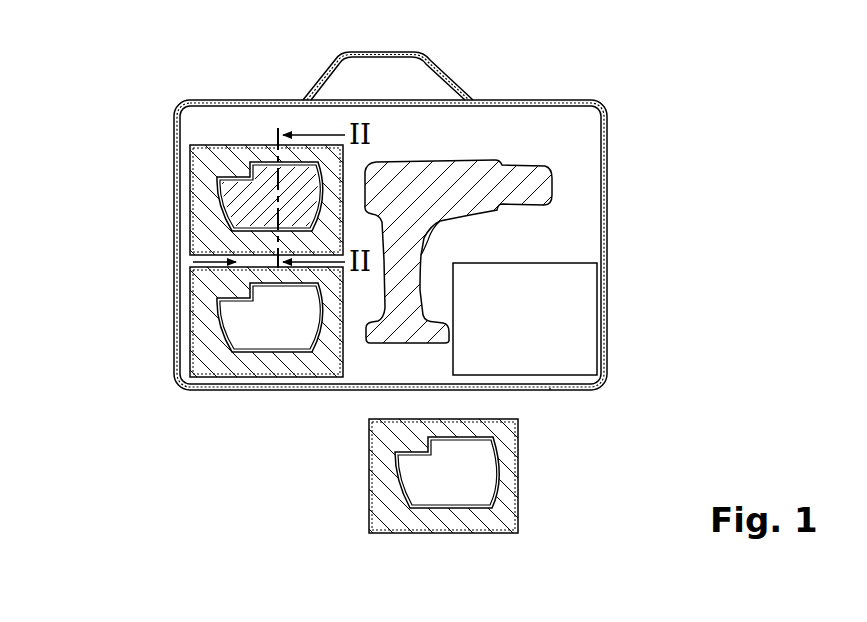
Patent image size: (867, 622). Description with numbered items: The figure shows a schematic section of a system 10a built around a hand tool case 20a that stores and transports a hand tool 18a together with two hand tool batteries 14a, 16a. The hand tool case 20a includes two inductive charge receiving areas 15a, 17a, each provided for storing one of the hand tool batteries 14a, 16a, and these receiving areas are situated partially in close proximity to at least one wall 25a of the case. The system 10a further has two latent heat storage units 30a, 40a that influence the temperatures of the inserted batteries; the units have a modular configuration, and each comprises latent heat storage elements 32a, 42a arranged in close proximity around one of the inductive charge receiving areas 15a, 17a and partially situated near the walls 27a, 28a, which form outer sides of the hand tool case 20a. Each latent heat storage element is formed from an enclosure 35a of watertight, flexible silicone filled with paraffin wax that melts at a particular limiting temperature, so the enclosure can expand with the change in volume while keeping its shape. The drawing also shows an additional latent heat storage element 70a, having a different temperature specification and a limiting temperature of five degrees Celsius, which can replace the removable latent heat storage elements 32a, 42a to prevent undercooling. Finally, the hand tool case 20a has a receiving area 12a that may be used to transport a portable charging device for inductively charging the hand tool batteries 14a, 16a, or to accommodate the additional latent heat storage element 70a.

The system 10a is at (143, 62).
The receiving area 12a is at (503, 331).
The hand tool battery 14a is at (234, 192).
The inductive charge receiving area 15a is at (270, 170).
The hand tool battery 16a is at (242, 318).
The inductive charge receiving area 17a is at (298, 345).
The hand tool 18a is at (478, 178).
The hand tool case 20a is at (630, 124).
The wall 25a is at (179, 200).
The wall 27a is at (172, 264).
The wall 28a is at (550, 398).
The latent heat storage unit 30a is at (203, 146).
The latent heat storage element 32a is at (216, 158).
The enclosure 35a is at (190, 160).
The latent heat storage unit 40a is at (203, 358).
The latent heat storage element 42a is at (223, 360).
The additional latent heat storage element 70a is at (504, 492).